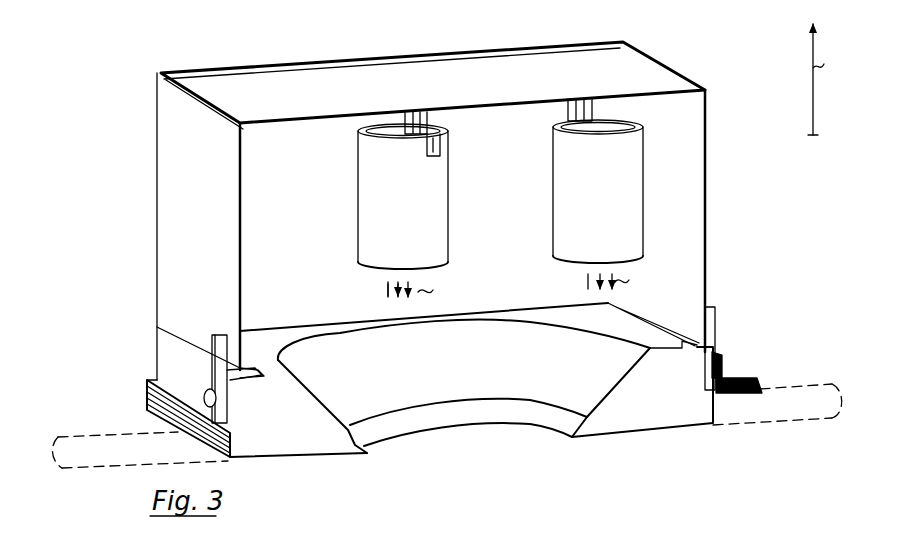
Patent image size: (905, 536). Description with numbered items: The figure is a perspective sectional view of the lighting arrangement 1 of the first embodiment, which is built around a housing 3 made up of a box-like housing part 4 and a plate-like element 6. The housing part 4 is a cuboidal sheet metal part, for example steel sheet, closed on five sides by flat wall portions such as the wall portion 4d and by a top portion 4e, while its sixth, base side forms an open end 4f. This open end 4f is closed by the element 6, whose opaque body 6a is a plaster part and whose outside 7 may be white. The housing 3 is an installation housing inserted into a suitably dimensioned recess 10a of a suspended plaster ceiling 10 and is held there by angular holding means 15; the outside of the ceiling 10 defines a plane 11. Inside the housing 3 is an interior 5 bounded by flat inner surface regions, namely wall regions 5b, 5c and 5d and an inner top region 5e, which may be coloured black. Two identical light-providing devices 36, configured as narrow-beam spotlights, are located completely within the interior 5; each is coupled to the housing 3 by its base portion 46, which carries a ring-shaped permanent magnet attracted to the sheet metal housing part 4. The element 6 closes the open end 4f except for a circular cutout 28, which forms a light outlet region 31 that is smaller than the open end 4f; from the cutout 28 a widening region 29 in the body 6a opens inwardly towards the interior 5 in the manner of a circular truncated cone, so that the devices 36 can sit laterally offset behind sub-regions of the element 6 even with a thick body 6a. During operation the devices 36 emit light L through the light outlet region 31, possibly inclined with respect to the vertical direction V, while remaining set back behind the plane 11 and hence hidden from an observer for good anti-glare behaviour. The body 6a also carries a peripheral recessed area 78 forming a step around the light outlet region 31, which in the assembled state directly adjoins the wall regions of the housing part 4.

The lighting arrangement 1 is at (182, 48).
The housing 3 is at (688, 372).
The housing part 4 is at (694, 238).
The wall portion 4d is at (178, 170).
The top portion 4e is at (501, 70).
The open end 4f is at (148, 394).
The interior 5 is at (512, 269).
The wall region 5b is at (685, 127).
The wall region 5c is at (287, 260).
The wall region 5d is at (252, 175).
The inner top region 5e is at (507, 117).
The element 6 is at (641, 414).
The body 6a is at (677, 415).
The outside 7 is at (336, 462).
The suspended ceiling 10 is at (790, 420).
The recess 10a is at (707, 425).
The plane 11 is at (738, 434).
The holding means 15 is at (190, 364).
The cutout 28 is at (537, 437).
The widening region 29 is at (377, 370).
The light outlet region 31 is at (463, 444).
The light-providing device 36 is at (358, 233).
The base portion 46 is at (406, 110).
The recessed area 78 is at (668, 322).
The light L is at (515, 287).
The vertical direction V is at (823, 79).